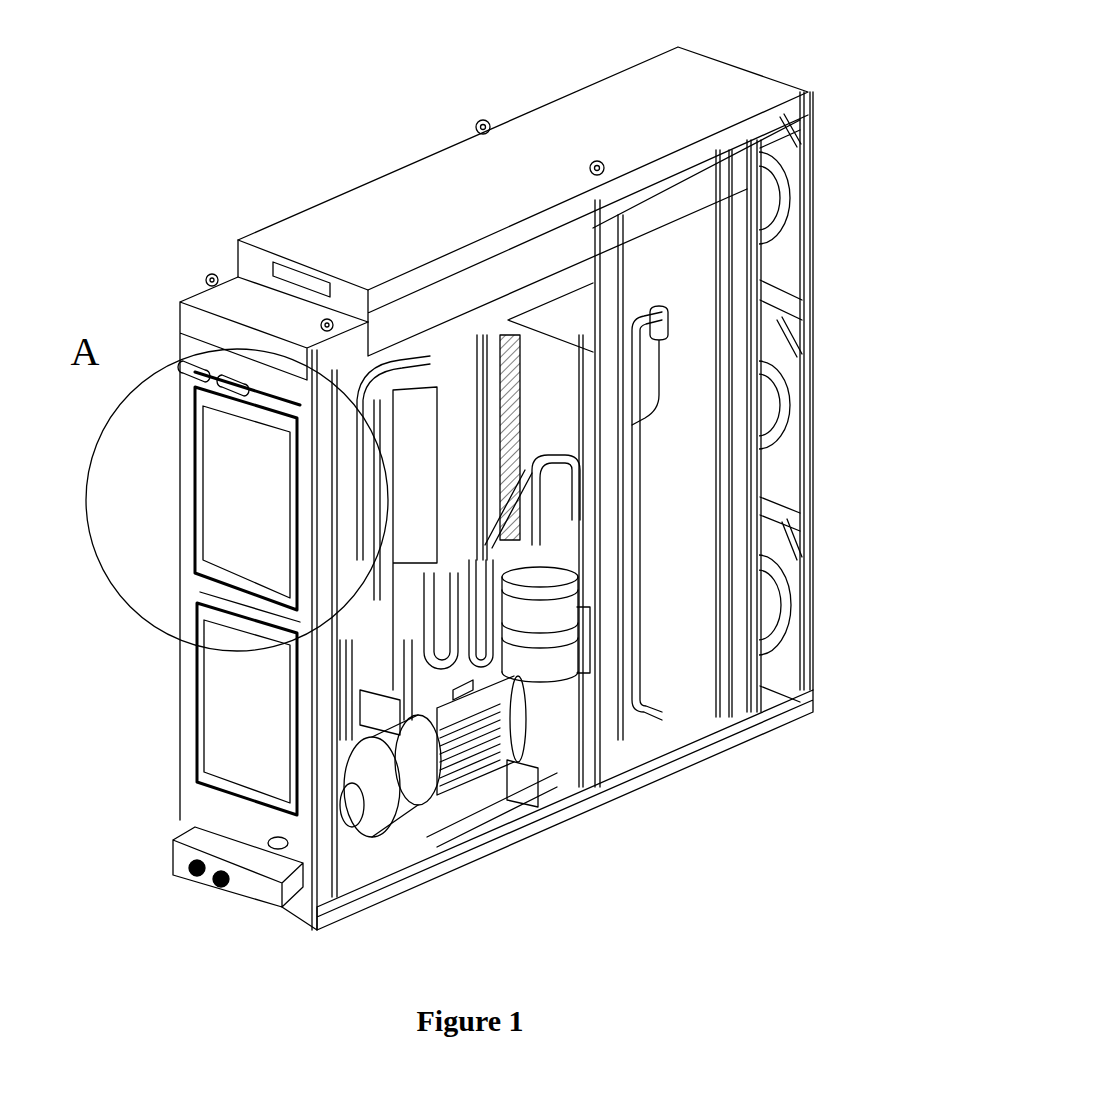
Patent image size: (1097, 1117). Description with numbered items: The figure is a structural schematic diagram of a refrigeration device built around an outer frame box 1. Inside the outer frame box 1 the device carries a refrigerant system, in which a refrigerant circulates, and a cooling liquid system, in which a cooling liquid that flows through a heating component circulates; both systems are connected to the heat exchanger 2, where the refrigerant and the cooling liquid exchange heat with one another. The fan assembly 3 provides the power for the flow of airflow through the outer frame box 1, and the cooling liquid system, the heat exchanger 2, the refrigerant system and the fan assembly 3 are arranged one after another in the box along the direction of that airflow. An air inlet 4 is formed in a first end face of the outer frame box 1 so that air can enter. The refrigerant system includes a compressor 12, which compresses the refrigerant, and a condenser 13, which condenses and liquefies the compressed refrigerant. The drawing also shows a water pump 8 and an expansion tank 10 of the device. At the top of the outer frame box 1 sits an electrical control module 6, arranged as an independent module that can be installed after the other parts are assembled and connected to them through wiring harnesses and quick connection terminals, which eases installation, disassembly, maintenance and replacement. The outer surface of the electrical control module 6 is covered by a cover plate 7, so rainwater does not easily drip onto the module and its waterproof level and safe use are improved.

The outer frame box 1 is at (345, 895).
The heat exchanger 2 is at (455, 420).
The fan assembly 3 is at (772, 395).
The air inlet 4 is at (193, 470).
The electrical control module 6 is at (513, 268).
The cover plate 7 is at (483, 163).
The water pump 8 is at (513, 812).
The expansion tank 10 is at (345, 660).
The compressor 12 is at (553, 680).
The condenser 13 is at (650, 472).